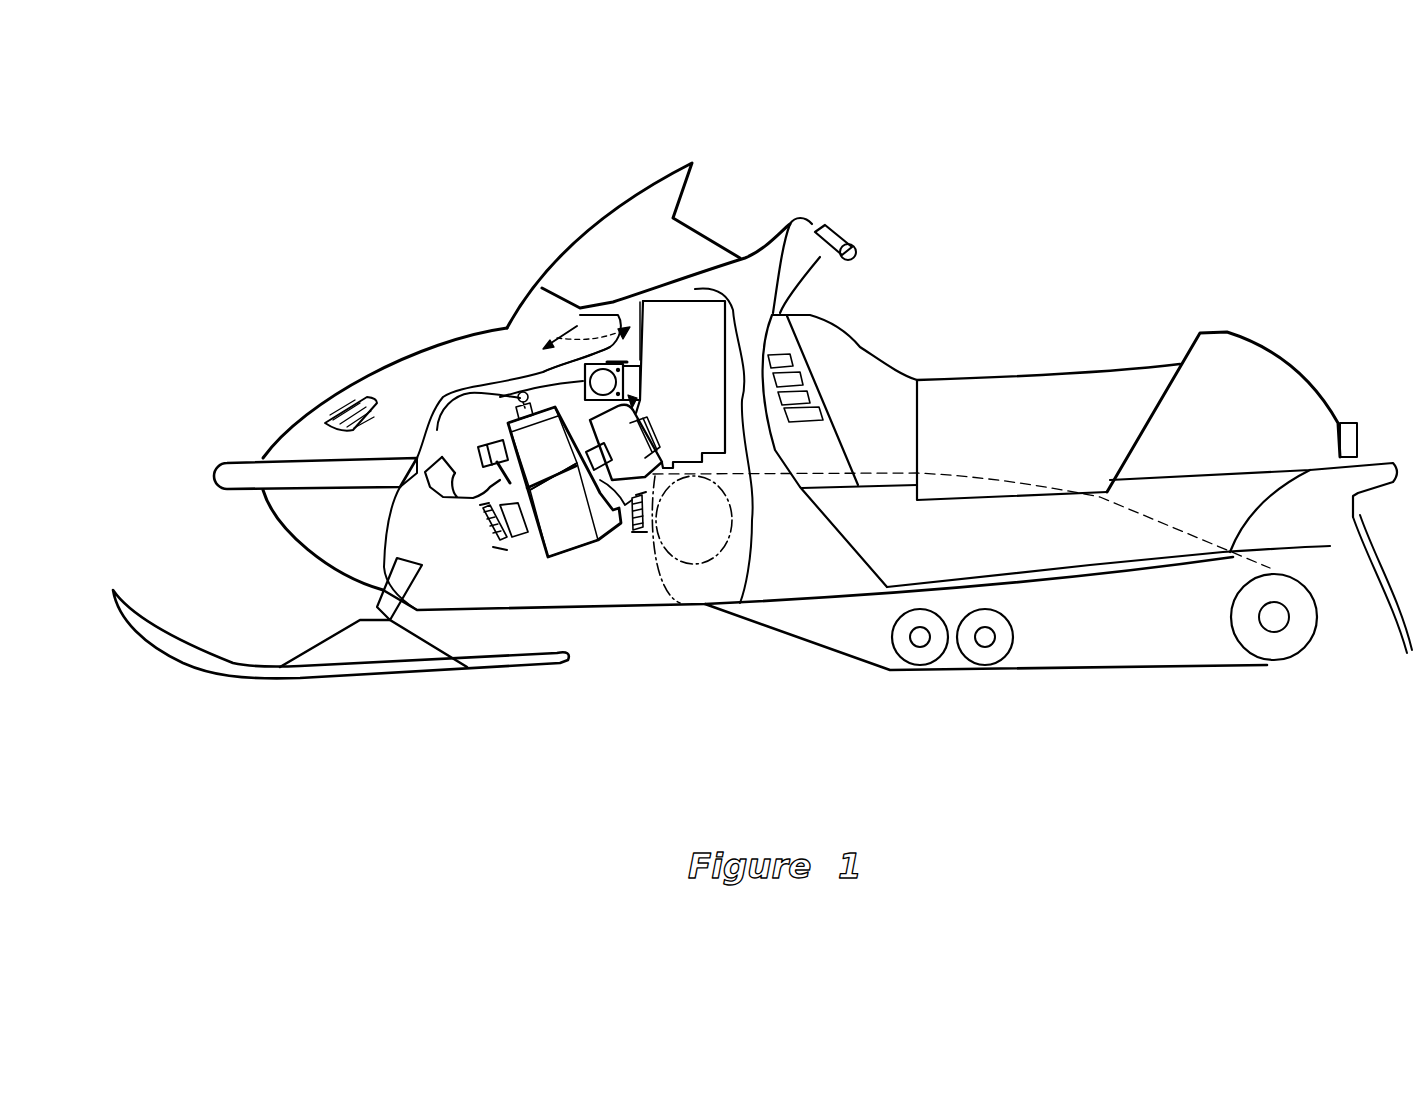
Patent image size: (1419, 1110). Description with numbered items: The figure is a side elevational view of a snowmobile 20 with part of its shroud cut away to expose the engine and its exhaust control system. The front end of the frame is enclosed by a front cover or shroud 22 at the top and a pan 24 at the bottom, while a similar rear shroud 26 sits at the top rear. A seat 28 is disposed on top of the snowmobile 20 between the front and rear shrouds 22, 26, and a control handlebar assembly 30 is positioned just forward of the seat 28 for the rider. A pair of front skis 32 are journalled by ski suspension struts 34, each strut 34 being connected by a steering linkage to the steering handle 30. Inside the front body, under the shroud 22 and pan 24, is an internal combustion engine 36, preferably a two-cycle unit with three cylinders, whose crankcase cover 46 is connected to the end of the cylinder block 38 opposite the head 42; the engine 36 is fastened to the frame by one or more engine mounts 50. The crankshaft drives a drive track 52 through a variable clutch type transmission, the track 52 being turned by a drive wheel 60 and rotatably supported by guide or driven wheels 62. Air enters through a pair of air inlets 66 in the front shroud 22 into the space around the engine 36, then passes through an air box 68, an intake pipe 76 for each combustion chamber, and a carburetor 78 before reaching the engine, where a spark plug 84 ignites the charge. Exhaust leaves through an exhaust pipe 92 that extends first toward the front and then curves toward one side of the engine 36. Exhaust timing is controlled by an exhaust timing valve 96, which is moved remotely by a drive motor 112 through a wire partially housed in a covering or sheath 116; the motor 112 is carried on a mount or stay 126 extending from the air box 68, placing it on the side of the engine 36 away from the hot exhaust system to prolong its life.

The snowmobile 20 is at (998, 252).
The front cover or shroud 22 is at (458, 352).
The pan 24 is at (313, 533).
The rear cover or shroud 26 is at (1267, 367).
The seat 28 is at (978, 390).
The control handlebar assembly 30 is at (830, 242).
The front skis 32 is at (490, 673).
The ski suspension struts 34 is at (373, 607).
The internal combustion engine 36 is at (582, 557).
The cylinder block 38 is at (528, 445).
The head 42 is at (493, 425).
The crankcase cover 46 is at (555, 533).
The engine mounts 50 is at (484, 508).
The drive track 52 is at (1115, 668).
The drive wheel 60 is at (706, 545).
The guide or driven wheels 62 is at (1007, 638).
The air inlets 66 is at (333, 407).
The air box 68 is at (697, 297).
The intake pipe 76 is at (633, 390).
The carburetor 78 is at (630, 450).
The spark plug 84 is at (514, 393).
The exhaust pipe 92 is at (445, 500).
The exhaust timing valve 96 is at (467, 418).
The drive motor 112 is at (597, 362).
The covering or sheath 116 is at (450, 400).
The mount or stay 126 is at (628, 380).